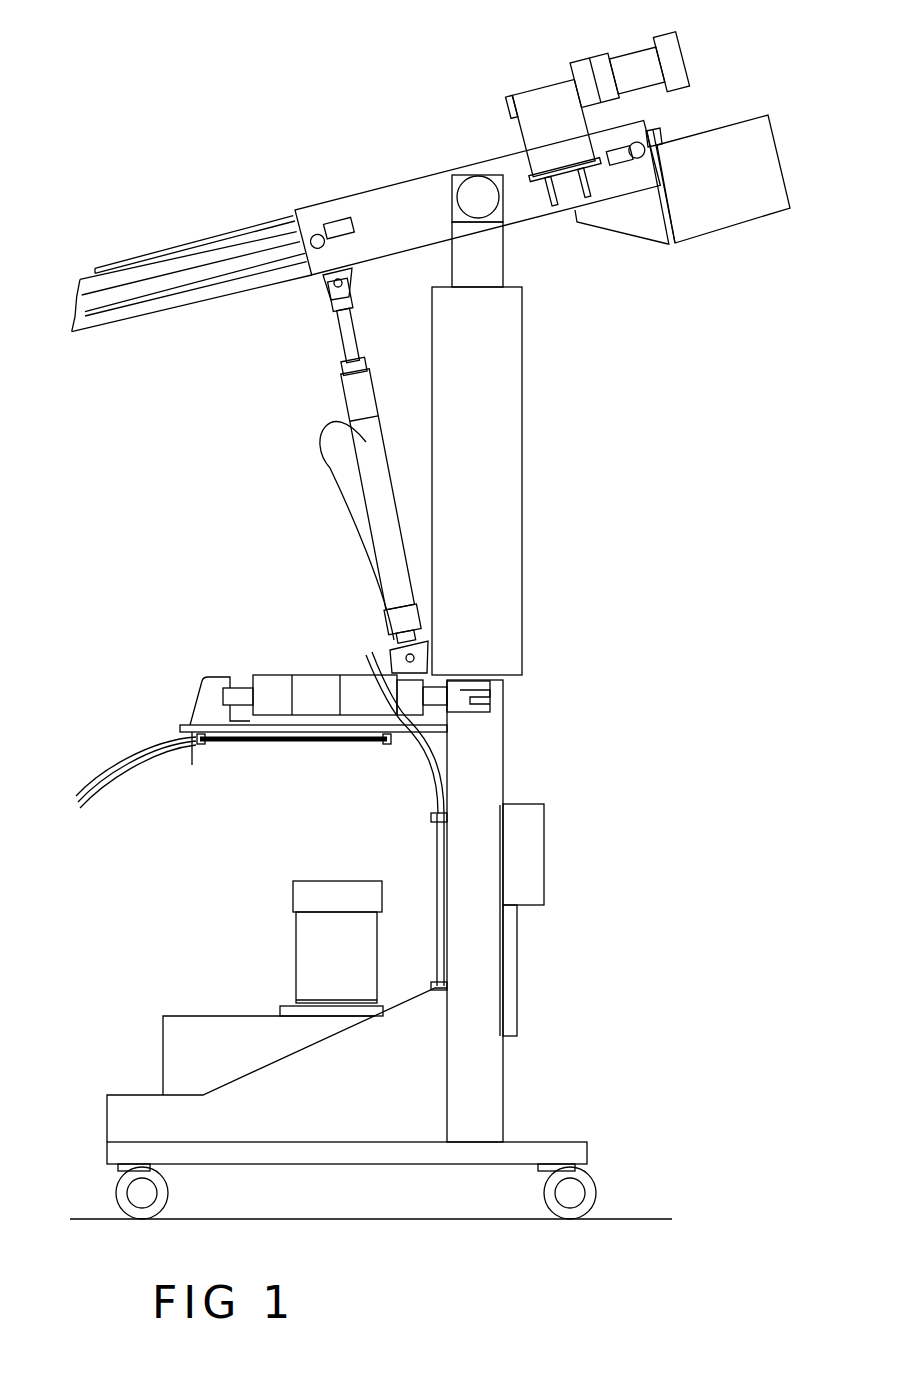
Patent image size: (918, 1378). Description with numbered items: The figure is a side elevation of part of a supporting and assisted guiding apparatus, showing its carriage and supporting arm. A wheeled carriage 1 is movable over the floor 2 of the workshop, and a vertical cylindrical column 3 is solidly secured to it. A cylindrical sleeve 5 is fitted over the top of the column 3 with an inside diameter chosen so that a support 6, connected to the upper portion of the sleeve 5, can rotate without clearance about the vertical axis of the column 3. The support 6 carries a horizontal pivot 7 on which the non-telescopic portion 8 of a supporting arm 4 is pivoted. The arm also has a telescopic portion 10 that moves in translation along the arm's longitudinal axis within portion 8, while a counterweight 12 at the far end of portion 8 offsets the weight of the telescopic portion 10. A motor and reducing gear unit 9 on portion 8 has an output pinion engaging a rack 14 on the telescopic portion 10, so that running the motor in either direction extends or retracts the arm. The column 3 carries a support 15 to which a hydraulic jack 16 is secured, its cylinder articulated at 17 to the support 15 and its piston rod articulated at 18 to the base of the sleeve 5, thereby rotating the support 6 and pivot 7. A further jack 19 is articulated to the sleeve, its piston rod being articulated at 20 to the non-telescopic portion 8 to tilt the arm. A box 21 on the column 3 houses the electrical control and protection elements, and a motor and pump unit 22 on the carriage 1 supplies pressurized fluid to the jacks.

The carriage 1 is at (505, 1154).
The floor 2 is at (596, 1240).
The vertical cylindrical column 3 is at (494, 768).
The supporting arm 4 is at (208, 275).
The cylindrical sleeve 5 is at (495, 558).
The support 6 is at (495, 258).
The horizontal pivot 7 is at (476, 196).
The non-telescopic portion 8 is at (530, 208).
The motor and reducing gear unit 9 is at (648, 66).
The telescopic portion 10 is at (110, 297).
The counterweight 12 is at (706, 213).
The rack 14 is at (162, 250).
The support 15 is at (388, 741).
The hydraulic jack 16 is at (316, 673).
The articulation 17 is at (246, 690).
The articulation 18 is at (408, 658).
The jack 19 is at (367, 442).
The articulation 20 is at (325, 287).
The box 21 is at (529, 866).
The motor and pump unit 22 is at (240, 1033).